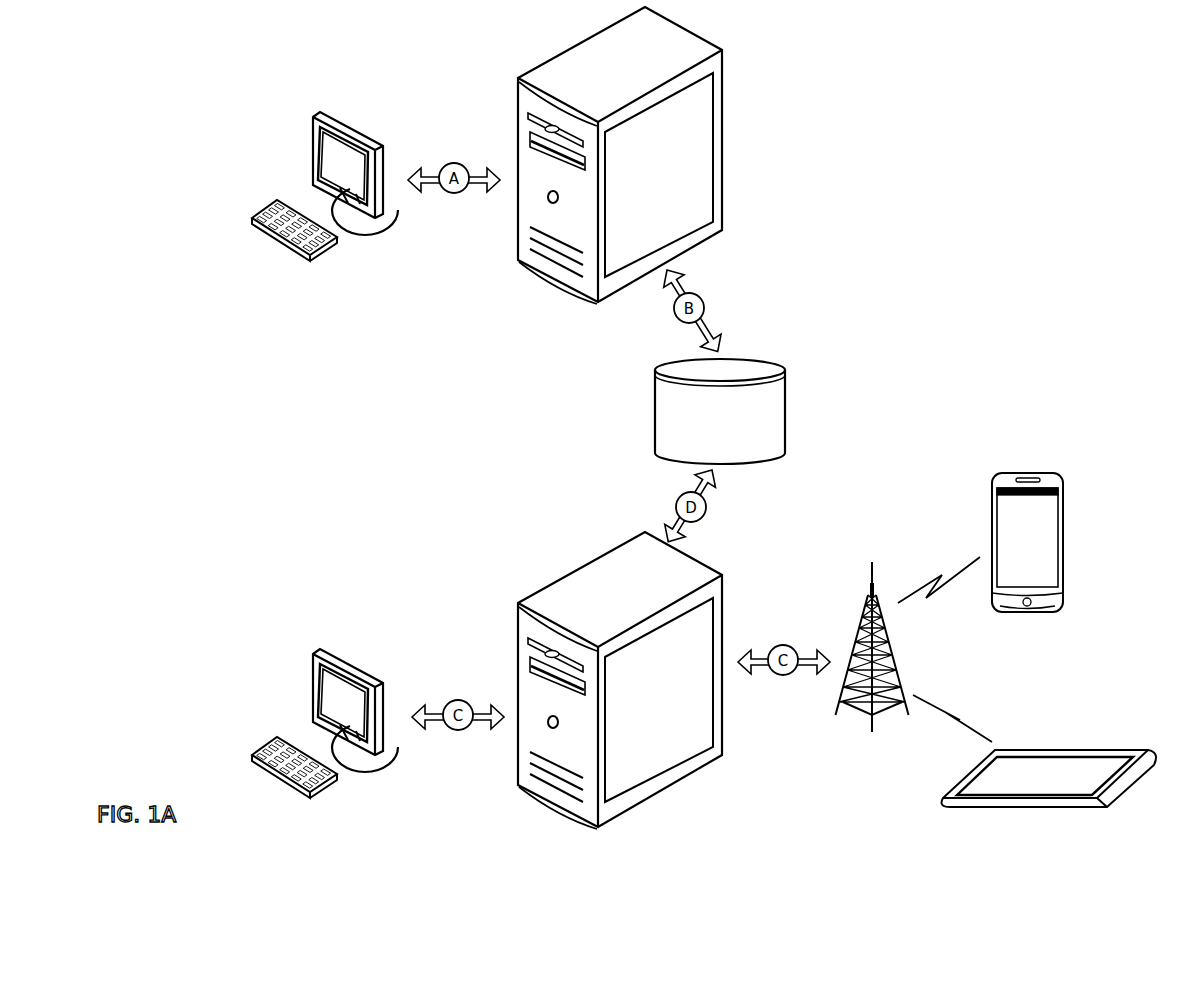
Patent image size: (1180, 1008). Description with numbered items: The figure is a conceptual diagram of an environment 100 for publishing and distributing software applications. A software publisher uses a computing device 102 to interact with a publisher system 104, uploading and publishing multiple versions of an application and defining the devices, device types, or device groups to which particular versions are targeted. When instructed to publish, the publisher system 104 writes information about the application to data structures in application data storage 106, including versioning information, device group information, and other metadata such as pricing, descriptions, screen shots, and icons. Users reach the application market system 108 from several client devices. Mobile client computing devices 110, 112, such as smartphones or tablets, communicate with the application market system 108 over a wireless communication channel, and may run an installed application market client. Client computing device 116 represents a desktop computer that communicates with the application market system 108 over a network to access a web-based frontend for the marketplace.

The environment 100 is at (155, 54).
The computing device 102 is at (295, 248).
The publisher system 104 is at (719, 40).
The application data storage 106 is at (760, 357).
The application market system 108 is at (582, 565).
The mobile client computing device 110 is at (1064, 480).
The mobile client computing device 112 is at (1132, 750).
The client computing device 116 is at (297, 787).